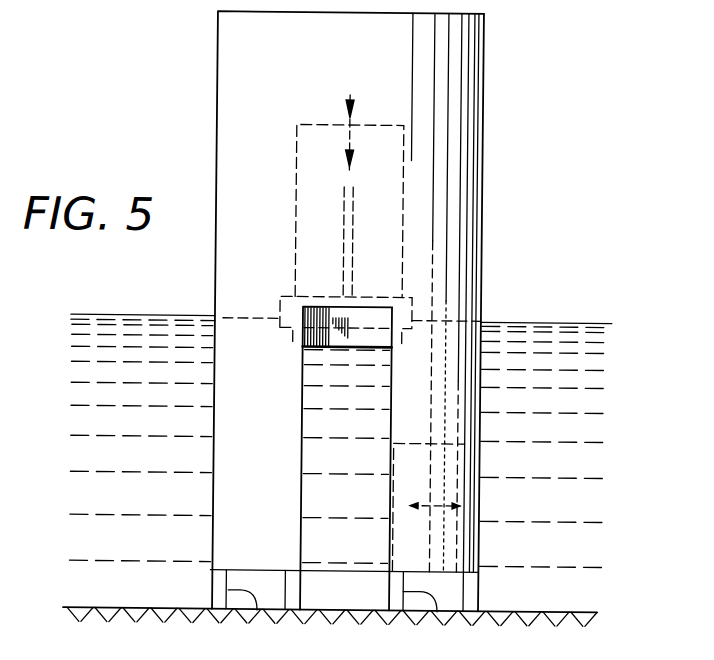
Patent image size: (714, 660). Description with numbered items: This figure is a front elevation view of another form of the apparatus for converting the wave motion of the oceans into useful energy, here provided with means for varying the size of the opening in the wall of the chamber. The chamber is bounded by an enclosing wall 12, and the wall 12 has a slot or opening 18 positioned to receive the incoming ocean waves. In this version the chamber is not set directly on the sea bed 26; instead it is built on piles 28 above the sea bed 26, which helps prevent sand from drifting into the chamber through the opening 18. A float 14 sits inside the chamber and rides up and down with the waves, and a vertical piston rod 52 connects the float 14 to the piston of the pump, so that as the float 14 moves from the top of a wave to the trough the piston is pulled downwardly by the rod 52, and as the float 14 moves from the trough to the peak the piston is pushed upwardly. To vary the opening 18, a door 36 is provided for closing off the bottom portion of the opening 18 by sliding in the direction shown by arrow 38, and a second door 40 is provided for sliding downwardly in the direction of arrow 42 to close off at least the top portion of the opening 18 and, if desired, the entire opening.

The enclosing wall 12 is at (213, 500).
The float 14 is at (292, 297).
The opening 18 is at (325, 556).
The sea bed 26 is at (376, 645).
The piles 28 is at (288, 594).
The door 36 is at (458, 442).
The arrow 38 is at (432, 508).
The second door 40 is at (295, 136).
The arrow 42 is at (348, 112).
The vertical piston rod 52 is at (343, 213).